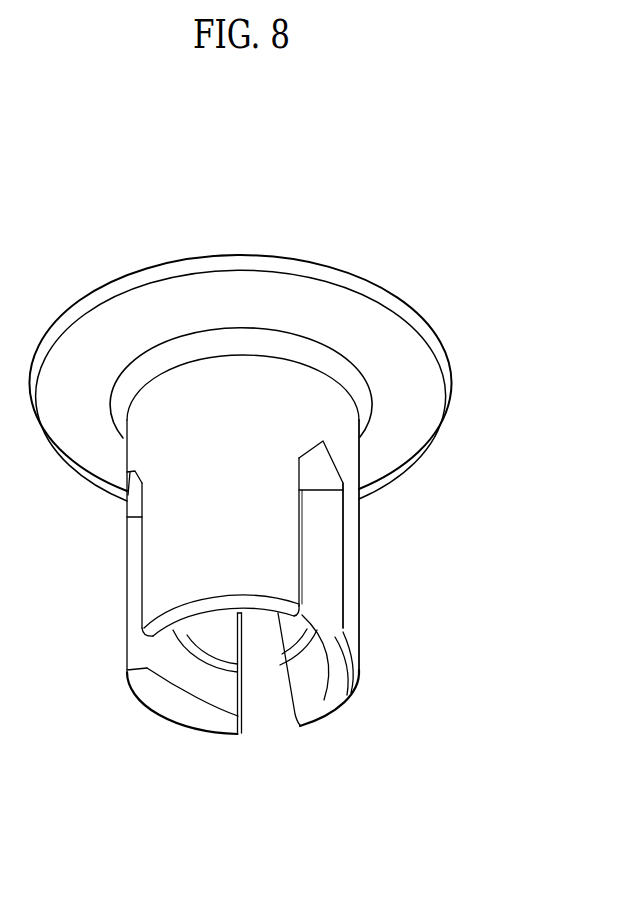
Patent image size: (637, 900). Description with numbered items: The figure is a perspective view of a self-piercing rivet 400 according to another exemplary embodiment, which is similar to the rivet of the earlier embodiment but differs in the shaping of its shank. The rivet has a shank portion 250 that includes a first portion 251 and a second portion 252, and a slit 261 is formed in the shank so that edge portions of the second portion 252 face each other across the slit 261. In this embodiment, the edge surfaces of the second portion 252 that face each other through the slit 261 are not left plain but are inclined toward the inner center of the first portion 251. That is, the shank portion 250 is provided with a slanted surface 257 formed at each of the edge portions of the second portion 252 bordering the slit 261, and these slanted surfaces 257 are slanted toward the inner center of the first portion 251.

The self-piercing rivet 400 is at (252, 183).
The shank portion 250 is at (387, 516).
The first portion 251 is at (316, 404).
The second portion 252 is at (352, 582).
The slanted surface 257 is at (327, 611).
The slit 261 is at (266, 693).